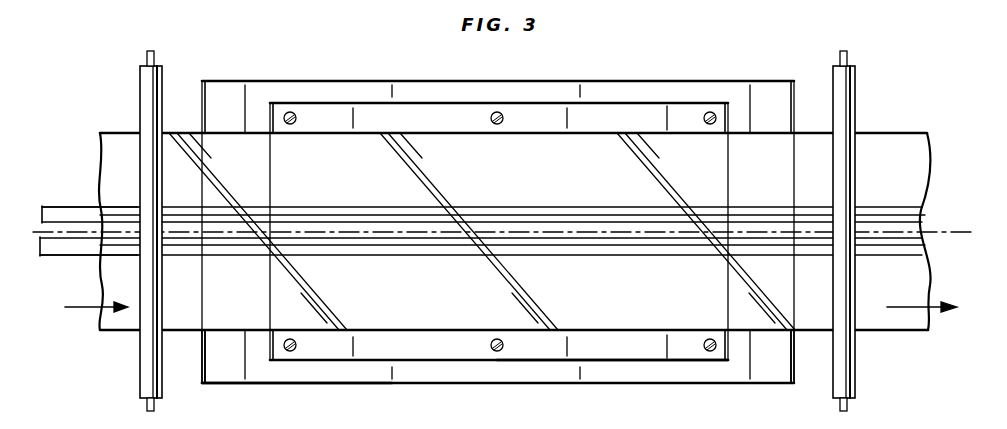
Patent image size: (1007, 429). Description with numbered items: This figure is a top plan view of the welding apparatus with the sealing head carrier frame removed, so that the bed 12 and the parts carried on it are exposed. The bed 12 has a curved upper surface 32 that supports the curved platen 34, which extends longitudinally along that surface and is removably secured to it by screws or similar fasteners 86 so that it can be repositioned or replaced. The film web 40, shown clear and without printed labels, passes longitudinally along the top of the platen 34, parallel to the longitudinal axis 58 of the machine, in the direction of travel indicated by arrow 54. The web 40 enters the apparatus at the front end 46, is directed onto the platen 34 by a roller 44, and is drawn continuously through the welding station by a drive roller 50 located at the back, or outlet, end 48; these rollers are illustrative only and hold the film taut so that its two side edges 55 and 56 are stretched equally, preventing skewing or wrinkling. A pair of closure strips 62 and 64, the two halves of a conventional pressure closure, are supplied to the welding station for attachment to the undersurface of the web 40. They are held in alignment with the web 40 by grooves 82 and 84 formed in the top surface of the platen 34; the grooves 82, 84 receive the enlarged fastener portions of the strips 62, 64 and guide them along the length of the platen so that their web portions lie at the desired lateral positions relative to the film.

The bed 12 is at (390, 381).
The curved upper surface 32 is at (305, 372).
The platen 34 is at (559, 347).
The film web 40 is at (122, 145).
The roller 44 is at (144, 383).
The front end 46 is at (202, 372).
The back end 48 is at (794, 368).
The drive roller 50 is at (852, 388).
The arrow 54 is at (87, 310).
The side edge 55 is at (375, 133).
The side edge 56 is at (455, 331).
The longitudinal axis 58 is at (59, 232).
The closure strip 62 is at (88, 213).
The closure strip 64 is at (86, 257).
The groove 82 is at (329, 208).
The groove 84 is at (343, 248).
The screws 86 is at (294, 111).